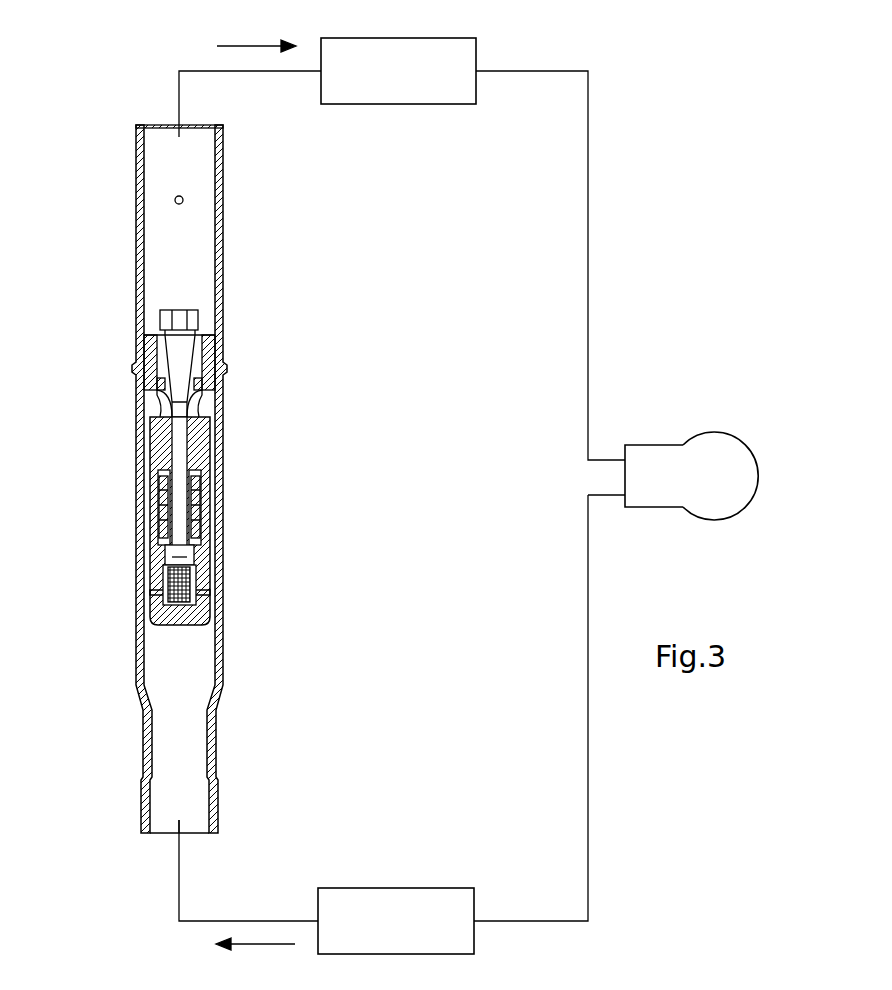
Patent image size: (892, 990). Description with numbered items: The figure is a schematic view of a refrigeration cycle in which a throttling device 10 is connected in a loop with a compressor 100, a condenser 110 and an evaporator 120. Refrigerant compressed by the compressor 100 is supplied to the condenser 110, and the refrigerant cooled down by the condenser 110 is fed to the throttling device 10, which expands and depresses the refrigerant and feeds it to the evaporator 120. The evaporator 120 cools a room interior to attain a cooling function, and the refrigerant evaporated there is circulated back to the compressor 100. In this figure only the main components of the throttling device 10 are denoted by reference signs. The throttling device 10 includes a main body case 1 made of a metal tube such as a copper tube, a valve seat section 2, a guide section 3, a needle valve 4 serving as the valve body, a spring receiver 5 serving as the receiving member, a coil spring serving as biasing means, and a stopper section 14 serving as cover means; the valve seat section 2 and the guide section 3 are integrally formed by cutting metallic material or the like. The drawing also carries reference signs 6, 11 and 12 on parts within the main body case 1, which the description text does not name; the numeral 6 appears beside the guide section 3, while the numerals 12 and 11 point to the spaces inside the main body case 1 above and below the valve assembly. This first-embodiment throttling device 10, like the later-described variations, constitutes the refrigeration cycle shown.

The main body case 1 is at (140, 300).
The valve seat section 2 is at (148, 358).
The guide section 3 is at (152, 452).
The needle valve 4 is at (160, 402).
The spring receiver 5 is at (160, 540).
The seal members 6 is at (160, 490).
The throttling device 10 is at (226, 288).
The lower chamber 11 is at (153, 657).
The upper chamber 12 is at (158, 253).
The stopper section 14 is at (150, 596).
The compressor 100 is at (713, 432).
The condenser 110 is at (375, 888).
The evaporator 120 is at (402, 38).